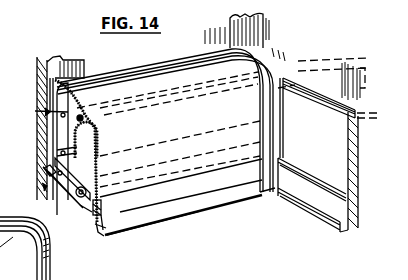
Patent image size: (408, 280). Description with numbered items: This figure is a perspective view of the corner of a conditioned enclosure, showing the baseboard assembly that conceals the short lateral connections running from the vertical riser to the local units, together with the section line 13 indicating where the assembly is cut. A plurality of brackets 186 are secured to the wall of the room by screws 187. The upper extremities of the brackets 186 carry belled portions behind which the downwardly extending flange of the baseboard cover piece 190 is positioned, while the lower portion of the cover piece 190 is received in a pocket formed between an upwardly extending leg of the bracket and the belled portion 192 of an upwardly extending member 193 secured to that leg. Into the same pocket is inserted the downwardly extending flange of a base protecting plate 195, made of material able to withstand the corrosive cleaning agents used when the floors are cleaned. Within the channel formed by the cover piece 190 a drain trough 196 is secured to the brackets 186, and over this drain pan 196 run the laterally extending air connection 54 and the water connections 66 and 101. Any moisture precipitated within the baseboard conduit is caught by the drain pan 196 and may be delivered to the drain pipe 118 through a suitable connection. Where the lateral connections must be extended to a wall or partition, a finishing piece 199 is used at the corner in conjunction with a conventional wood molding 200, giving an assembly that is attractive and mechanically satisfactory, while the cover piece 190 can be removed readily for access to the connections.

The section line 13 is at (166, 53).
The laterally extending air connection 54 is at (56, 163).
The water connection 66 is at (77, 118).
The water connection 101 is at (115, 122).
The drain pipe 118 is at (72, 200).
The bracket 186 is at (62, 136).
The screw 187 is at (47, 112).
The baseboard cover piece 190 is at (176, 138).
The belled portion 192 is at (102, 208).
The upwardly extending member 193 is at (95, 227).
The base protecting plate 195 is at (143, 225).
The drain trough 196 is at (45, 171).
The finishing piece 199 is at (278, 56).
The wood molding 200 is at (316, 200).